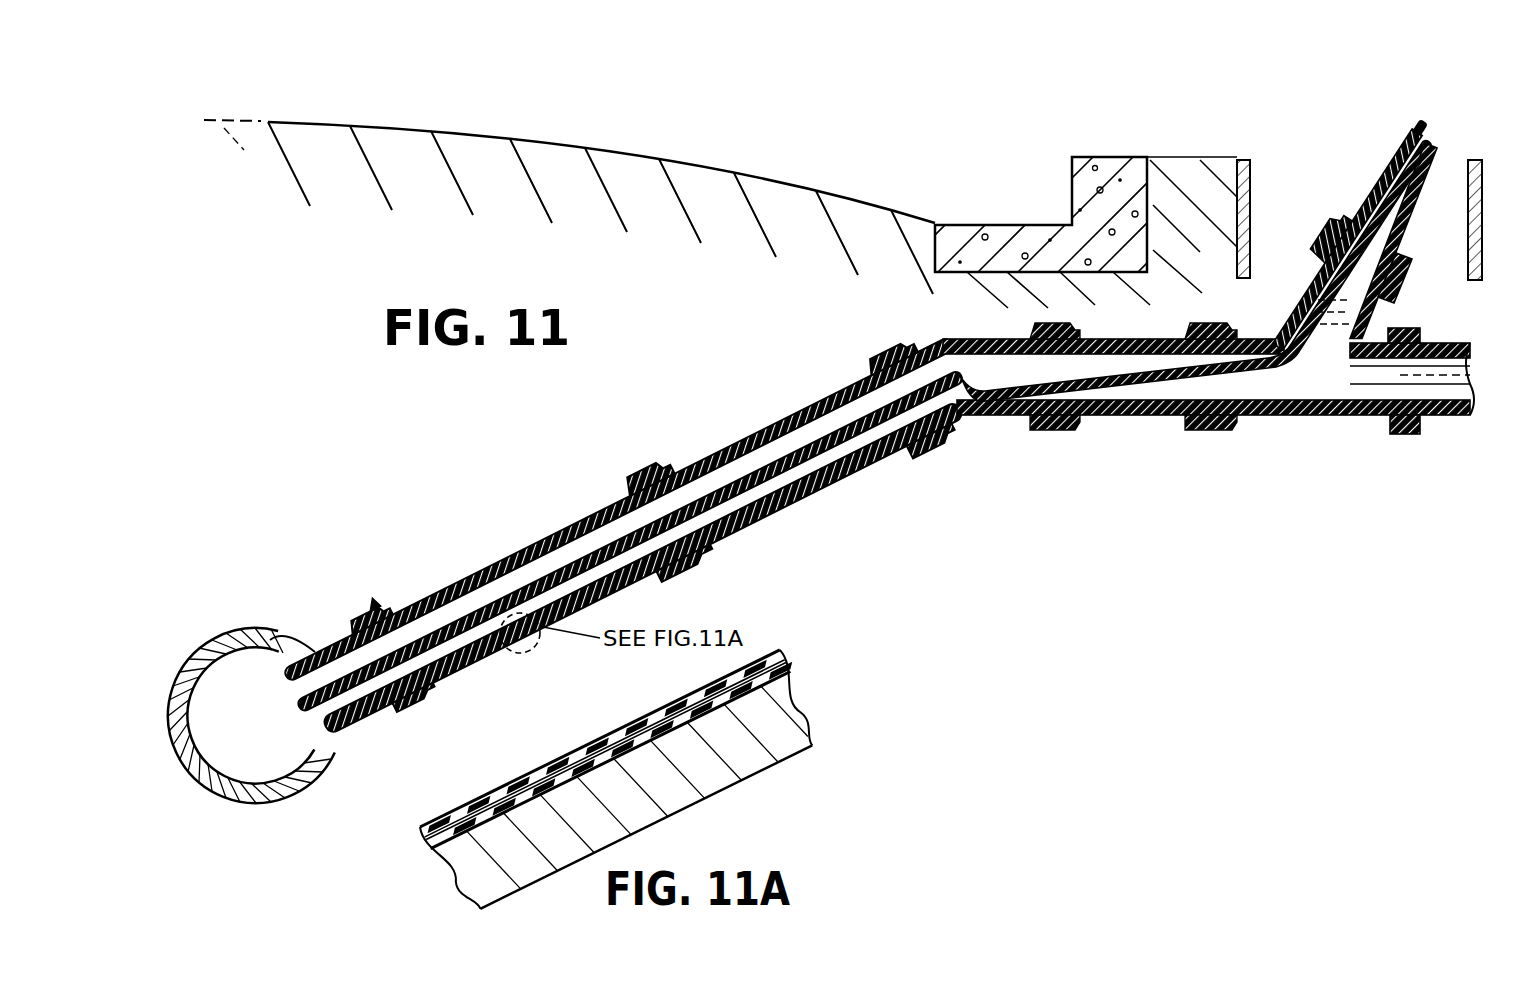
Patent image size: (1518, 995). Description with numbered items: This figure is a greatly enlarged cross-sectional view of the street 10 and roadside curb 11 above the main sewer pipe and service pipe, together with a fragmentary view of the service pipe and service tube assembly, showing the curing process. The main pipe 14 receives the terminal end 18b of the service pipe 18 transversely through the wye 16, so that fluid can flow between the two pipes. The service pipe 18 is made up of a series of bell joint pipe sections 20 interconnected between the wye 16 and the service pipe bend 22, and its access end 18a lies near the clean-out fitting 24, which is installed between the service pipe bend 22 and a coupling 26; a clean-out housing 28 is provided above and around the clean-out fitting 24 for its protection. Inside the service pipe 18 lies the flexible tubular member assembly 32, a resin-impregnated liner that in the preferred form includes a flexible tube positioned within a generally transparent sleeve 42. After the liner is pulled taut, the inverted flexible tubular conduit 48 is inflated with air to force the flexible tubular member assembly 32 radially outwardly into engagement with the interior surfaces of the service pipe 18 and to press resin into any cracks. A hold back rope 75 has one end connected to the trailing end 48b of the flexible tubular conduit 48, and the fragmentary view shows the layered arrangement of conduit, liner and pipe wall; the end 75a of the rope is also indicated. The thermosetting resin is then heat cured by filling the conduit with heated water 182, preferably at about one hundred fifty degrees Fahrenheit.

In FIG. 11, the street 10 is at (565, 140).
In FIG. 11, the roadside curb 11 is at (1100, 157).
In FIG. 11, the main pipe 14 is at (170, 744).
In FIG. 11, the wye 16 is at (372, 712).
In FIG. 11, the service pipe 18 is at (768, 530).
In FIG. 11, the access end 18a is at (1313, 273).
In FIG. 11, the terminal end 18b is at (348, 725).
In FIG. 11, the bell joint pipe sections 20 is at (766, 433).
In FIG. 11A, the bell joint pipe sections 20 is at (730, 770).
In FIG. 11, the service pipe bend 22 is at (995, 416).
In FIG. 11, the clean-out fitting 24 is at (1337, 418).
In FIG. 11, the coupling 26 is at (1428, 425).
In FIG. 11, the clean-out housing 28 is at (1243, 160).
In FIG. 11A, the flexible tubular member assembly 32 is at (772, 652).
In FIG. 11A, the transparent sleeve 42 is at (790, 690).
In FIG. 11, the flexible tubular conduit 48 is at (283, 665).
In FIG. 11A, the flexible tubular conduit 48 is at (602, 728).
In FIG. 11, the trailing end 48b is at (385, 605).
In FIG. 11, the hold back rope 75 is at (786, 466).
In FIG. 11, the tube end 75a is at (430, 632).
In FIG. 11, the water 182 is at (1275, 398).